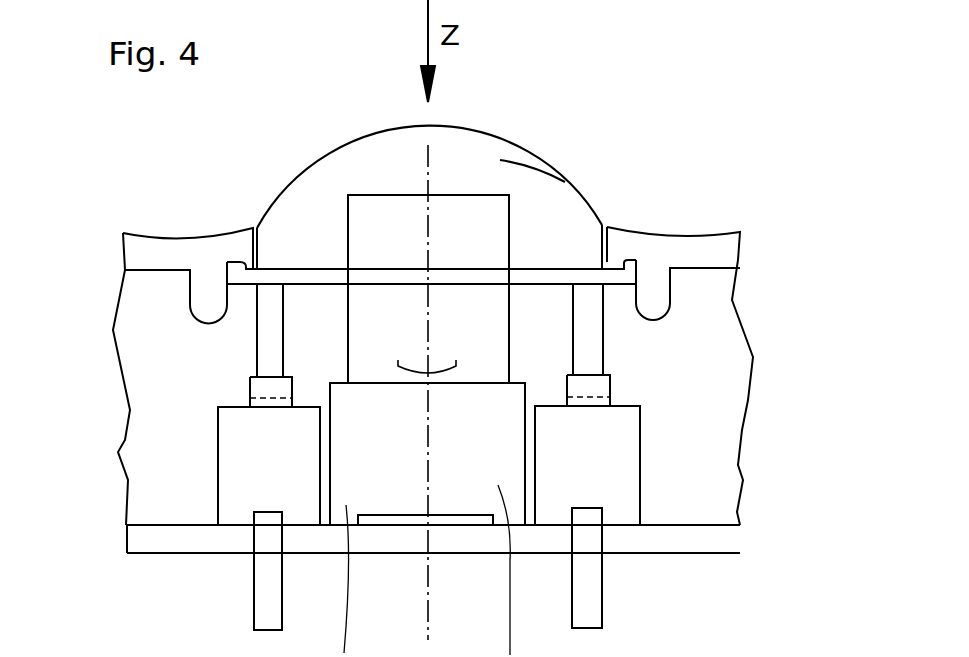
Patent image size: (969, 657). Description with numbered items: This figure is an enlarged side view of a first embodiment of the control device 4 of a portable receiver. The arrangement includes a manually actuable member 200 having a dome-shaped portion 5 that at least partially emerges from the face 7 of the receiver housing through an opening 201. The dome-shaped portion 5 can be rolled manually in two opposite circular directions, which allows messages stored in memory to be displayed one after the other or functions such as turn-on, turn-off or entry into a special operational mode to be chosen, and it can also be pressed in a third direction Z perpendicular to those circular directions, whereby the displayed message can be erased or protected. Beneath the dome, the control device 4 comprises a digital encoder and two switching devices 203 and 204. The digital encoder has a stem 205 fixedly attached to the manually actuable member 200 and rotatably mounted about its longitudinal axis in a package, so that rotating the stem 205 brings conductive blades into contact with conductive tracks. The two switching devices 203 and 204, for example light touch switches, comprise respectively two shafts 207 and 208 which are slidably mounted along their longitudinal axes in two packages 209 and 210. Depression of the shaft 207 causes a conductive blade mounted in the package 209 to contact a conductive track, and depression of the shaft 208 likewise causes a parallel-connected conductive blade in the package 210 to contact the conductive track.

The control device 4 is at (523, 110).
The dome-shaped portion 5 is at (565, 182).
The face 7 is at (727, 227).
The manually actuable member 200 is at (358, 157).
The opening 201 is at (256, 222).
The switching device 203 is at (625, 435).
The switching device 204 is at (238, 437).
The stem 205 is at (488, 220).
The shaft 207 is at (267, 338).
The shaft 208 is at (588, 348).
The package 209 is at (238, 490).
The package 210 is at (625, 490).